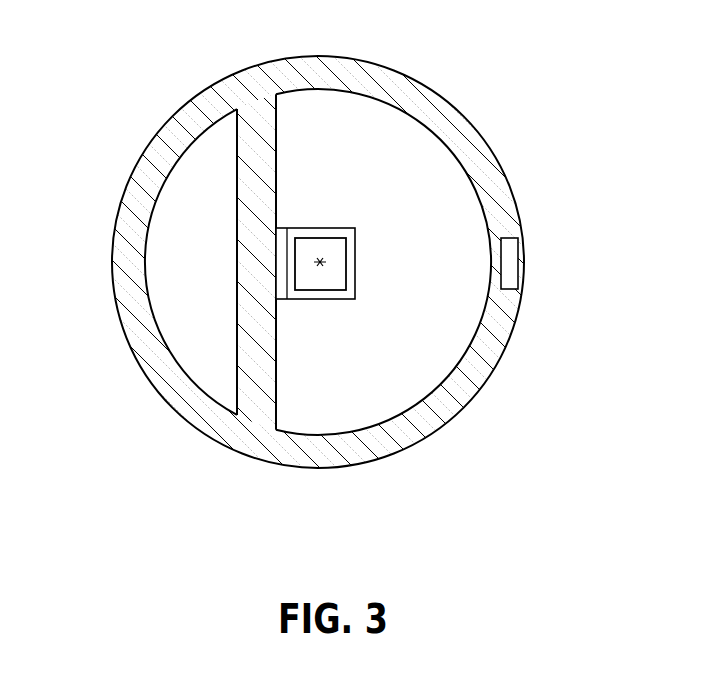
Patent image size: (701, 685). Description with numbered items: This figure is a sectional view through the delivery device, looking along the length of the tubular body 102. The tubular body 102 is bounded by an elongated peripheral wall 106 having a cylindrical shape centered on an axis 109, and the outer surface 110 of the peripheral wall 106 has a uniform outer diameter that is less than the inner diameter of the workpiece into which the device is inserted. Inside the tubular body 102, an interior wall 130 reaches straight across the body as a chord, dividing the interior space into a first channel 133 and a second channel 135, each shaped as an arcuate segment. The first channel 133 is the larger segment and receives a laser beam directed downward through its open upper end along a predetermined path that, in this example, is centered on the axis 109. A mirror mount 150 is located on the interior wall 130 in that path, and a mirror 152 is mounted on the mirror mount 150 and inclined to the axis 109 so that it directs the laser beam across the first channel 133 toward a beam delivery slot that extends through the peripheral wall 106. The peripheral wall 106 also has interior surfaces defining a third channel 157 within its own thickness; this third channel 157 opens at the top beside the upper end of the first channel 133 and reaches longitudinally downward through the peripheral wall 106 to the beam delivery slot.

The tubular body 102 is at (219, 81).
The peripheral wall 106 is at (175, 150).
The outer surface 110 is at (124, 192).
The interior wall 130 is at (237, 353).
The first channel 133 is at (370, 399).
The second channel 135 is at (223, 304).
The mirror mount 150 is at (313, 228).
The mirror 152 is at (330, 280).
The axis 109 is at (332, 254).
The third channel 157 is at (508, 260).